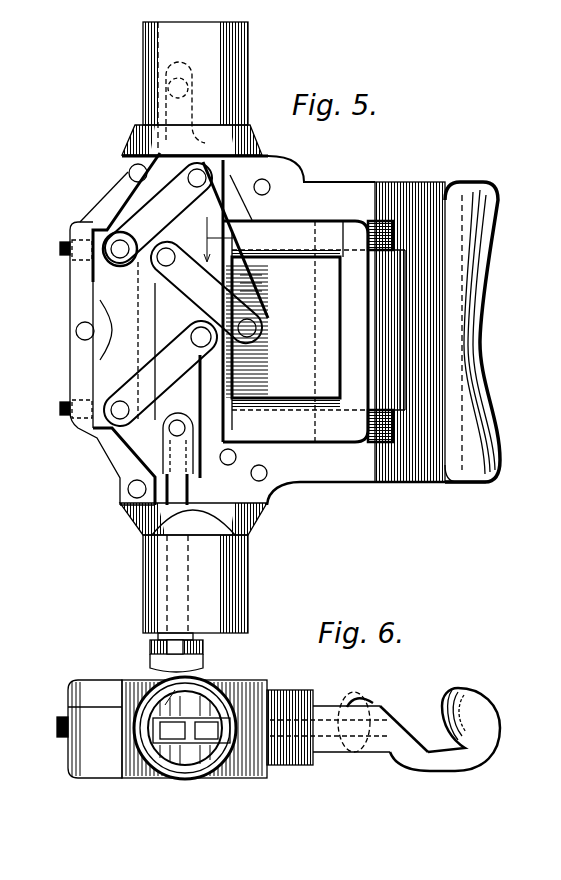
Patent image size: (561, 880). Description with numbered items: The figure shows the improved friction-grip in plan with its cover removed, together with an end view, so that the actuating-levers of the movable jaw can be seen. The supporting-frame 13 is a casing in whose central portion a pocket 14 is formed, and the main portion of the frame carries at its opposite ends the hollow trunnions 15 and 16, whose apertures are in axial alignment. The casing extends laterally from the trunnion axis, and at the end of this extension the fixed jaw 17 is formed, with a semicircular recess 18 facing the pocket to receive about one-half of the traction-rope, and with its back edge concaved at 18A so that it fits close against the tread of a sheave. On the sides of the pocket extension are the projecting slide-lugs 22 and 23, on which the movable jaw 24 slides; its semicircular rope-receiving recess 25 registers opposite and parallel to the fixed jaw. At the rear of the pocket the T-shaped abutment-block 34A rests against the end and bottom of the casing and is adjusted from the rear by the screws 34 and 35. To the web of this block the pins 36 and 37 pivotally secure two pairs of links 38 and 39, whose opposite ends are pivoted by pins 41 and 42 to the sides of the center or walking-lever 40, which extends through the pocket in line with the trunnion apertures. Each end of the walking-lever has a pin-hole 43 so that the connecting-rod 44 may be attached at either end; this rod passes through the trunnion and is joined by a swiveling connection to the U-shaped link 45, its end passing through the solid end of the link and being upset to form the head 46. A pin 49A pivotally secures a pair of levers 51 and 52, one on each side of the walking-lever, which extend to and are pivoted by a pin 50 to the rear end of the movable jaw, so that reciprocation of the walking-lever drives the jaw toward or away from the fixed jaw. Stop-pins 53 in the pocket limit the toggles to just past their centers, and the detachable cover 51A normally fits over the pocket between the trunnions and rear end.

In FIG. 5, the supporting-frame 13 is at (70, 353).
In FIG. 6, the supporting-frame 13 is at (98, 767).
In FIG. 5, the pocket 14 is at (272, 493).
In FIG. 5, the trunnion 15 is at (155, 65).
In FIG. 5, the trunnion 16 is at (160, 573).
In FIG. 5, the fixed jaw 17 is at (465, 327).
In FIG. 6, the fixed jaw 17 is at (480, 707).
In FIG. 5, the semicircular recess 18 is at (4, 331).
In FIG. 6, the semicircular recess 18 is at (457, 720).
In FIG. 5, the concaved back edge 18A is at (486, 266).
In FIG. 5, the slide-lug 22 is at (382, 250).
In FIG. 5, the slide-lug 23 is at (380, 412).
In FIG. 5, the movable jaw 24 is at (286, 327).
In FIG. 6, the semicircular rope-receiving recess 25 is at (372, 697).
In FIG. 5, the screw 34 is at (60, 252).
In FIG. 5, the abutment-block 34A is at (113, 297).
In FIG. 5, the screw 35 is at (60, 414).
In FIG. 6, the screw 35 is at (57, 723).
In FIG. 5, the pin 36 is at (87, 220).
In FIG. 5, the pin 37 is at (110, 433).
In FIG. 5, the links 38 is at (158, 213).
In FIG. 5, the links 39 is at (160, 373).
In FIG. 6, the links 39 is at (165, 710).
In FIG. 5, the walking-lever 40 is at (176, 390).
In FIG. 6, the walking-lever 40 is at (153, 729).
In FIG. 5, the pivotal pin 41 is at (186, 160).
In FIG. 5, the pivotal pin 42 is at (265, 328).
In FIG. 5, the pin-hole 43 is at (182, 88).
In FIG. 5, the connecting-rod 44 is at (175, 500).
In FIG. 6, the link 45 is at (204, 645).
In FIG. 6, the head 46 is at (204, 660).
In FIG. 5, the pin 49A is at (163, 250).
In FIG. 5, the pin 50 is at (250, 329).
In FIG. 5, the lever 51 is at (209, 252).
In FIG. 6, the lever 51 is at (227, 710).
In FIG. 6, the cover 51A is at (87, 693).
In FIG. 6, the lever 52 is at (220, 773).
In FIG. 5, the stop-pin 53 is at (236, 452).